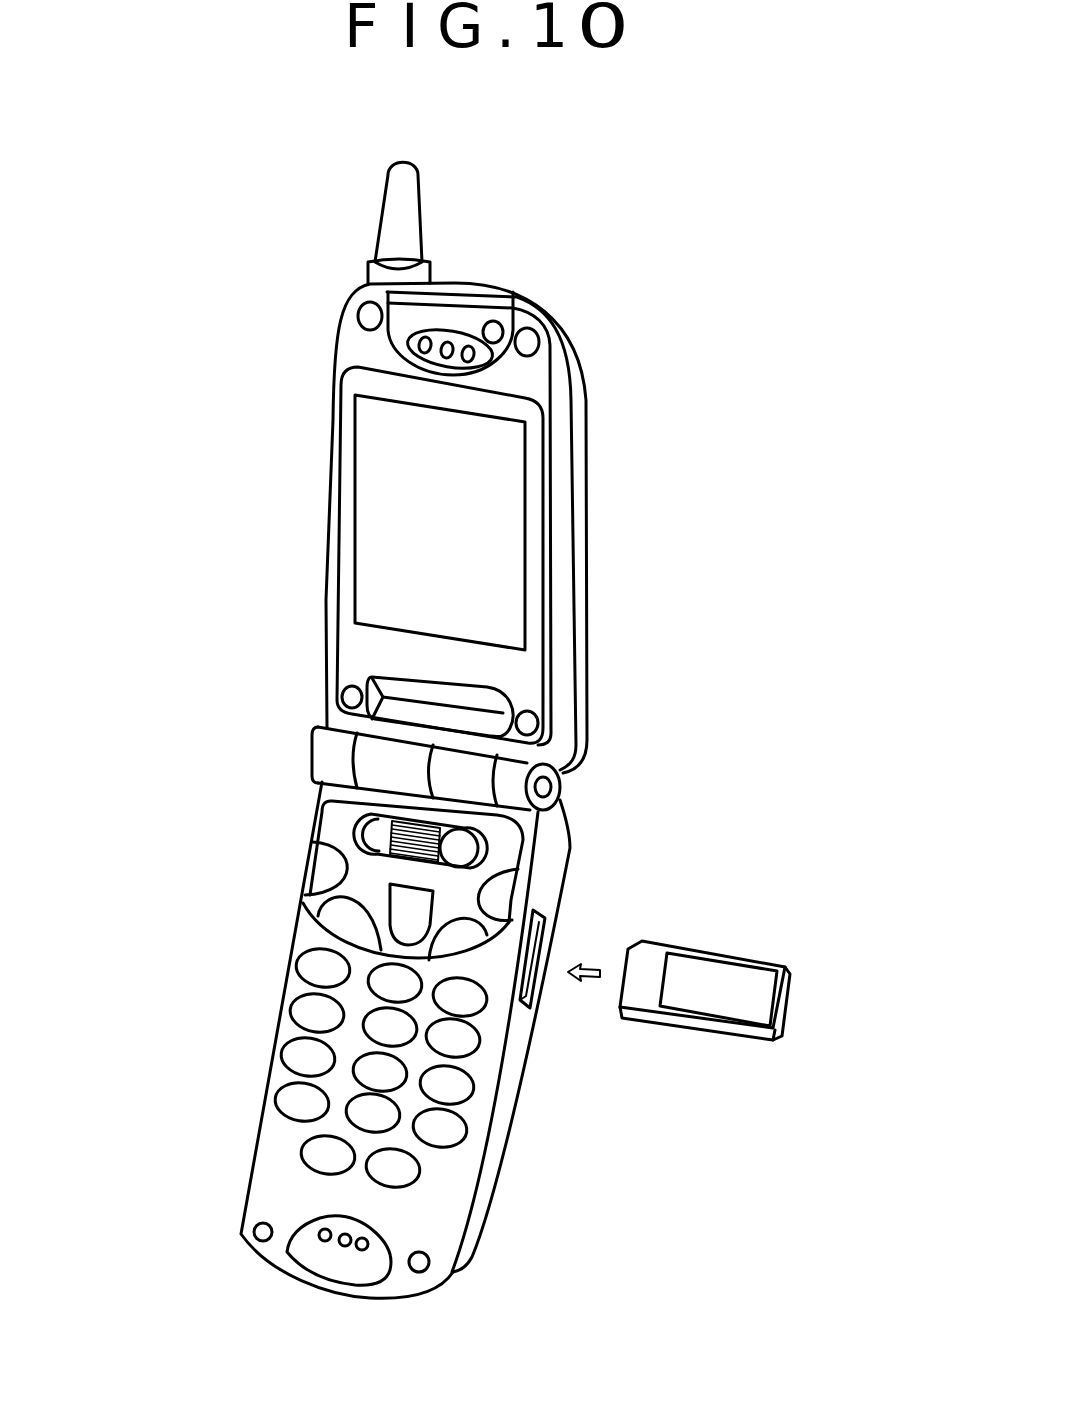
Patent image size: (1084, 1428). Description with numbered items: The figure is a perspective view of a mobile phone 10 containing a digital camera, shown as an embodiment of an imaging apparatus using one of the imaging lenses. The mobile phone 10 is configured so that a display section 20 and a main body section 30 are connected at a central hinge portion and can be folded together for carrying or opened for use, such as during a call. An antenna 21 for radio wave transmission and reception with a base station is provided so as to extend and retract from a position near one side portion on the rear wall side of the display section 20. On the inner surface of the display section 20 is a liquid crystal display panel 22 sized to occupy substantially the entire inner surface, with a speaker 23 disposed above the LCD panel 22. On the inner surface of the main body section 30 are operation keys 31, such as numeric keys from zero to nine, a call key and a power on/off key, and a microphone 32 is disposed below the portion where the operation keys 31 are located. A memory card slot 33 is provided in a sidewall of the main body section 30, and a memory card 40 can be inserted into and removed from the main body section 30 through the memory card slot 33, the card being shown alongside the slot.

The mobile phone 10 is at (642, 318).
The display section 20 is at (563, 512).
The antenna 21 is at (394, 222).
The liquid crystal display (LCD) panel 22 is at (407, 520).
The speaker 23 is at (442, 334).
The main body section 30 is at (270, 1143).
The operation keys 31 is at (493, 887).
The microphone 32 is at (330, 1262).
The memory card slot 33 is at (528, 985).
The memory card 40 is at (737, 975).